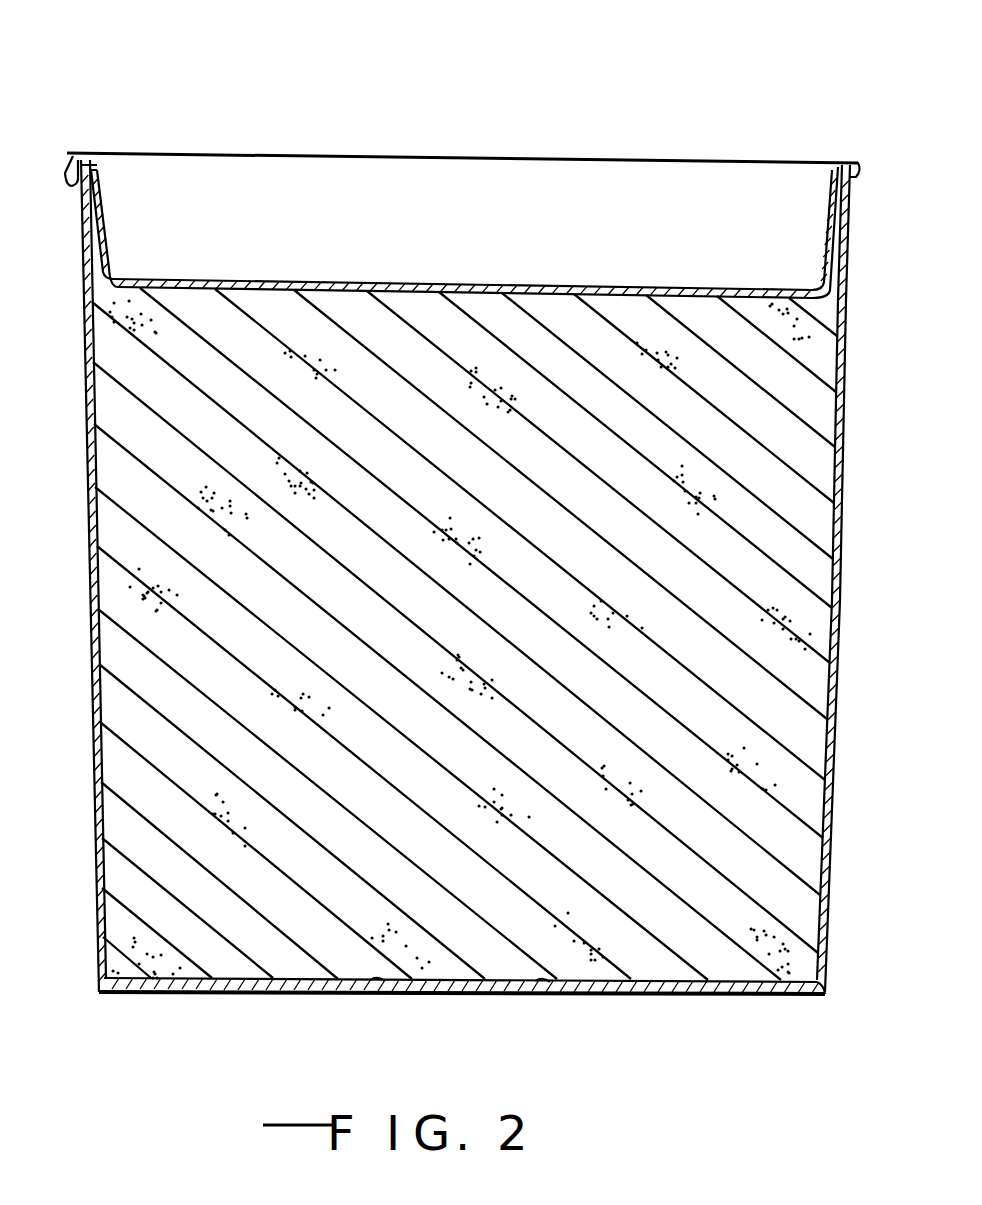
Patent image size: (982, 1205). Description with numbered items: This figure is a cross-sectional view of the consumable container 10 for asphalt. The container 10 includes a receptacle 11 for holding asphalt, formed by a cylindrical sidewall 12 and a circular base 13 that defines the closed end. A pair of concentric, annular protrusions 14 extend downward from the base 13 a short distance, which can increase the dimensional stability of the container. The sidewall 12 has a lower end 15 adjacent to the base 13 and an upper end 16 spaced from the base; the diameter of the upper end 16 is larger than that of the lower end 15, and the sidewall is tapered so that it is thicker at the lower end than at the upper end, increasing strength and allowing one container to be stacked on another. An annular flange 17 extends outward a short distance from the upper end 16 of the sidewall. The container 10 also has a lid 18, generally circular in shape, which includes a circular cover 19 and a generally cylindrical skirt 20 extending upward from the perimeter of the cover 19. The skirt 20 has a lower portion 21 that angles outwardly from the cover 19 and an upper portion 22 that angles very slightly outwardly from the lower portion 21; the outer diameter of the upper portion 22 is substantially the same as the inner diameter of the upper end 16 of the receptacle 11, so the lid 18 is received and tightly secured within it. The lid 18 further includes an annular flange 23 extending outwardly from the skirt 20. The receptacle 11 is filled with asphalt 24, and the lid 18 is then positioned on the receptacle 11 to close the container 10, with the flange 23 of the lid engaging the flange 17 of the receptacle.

The consumable container 10 is at (470, 540).
The receptacle 11 is at (88, 596).
The cylindrical sidewall 12 is at (832, 689).
The circular base 13 is at (650, 997).
The annular protrusions 14 is at (105, 994).
The lower end 15 is at (828, 988).
The upper end 16 is at (850, 192).
The annular flange 17 is at (93, 178).
The lid 18 is at (471, 178).
The circular cover 19 is at (424, 282).
The cylindrical skirt 20 is at (833, 220).
The lower portion 21 is at (103, 247).
The upper portion 22 is at (92, 167).
The annular flange 23 is at (70, 152).
The asphalt 24 is at (713, 607).